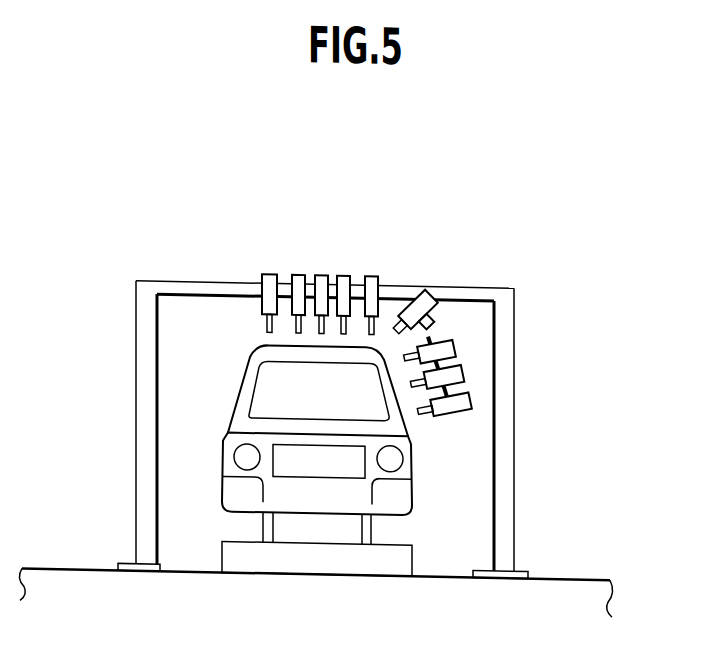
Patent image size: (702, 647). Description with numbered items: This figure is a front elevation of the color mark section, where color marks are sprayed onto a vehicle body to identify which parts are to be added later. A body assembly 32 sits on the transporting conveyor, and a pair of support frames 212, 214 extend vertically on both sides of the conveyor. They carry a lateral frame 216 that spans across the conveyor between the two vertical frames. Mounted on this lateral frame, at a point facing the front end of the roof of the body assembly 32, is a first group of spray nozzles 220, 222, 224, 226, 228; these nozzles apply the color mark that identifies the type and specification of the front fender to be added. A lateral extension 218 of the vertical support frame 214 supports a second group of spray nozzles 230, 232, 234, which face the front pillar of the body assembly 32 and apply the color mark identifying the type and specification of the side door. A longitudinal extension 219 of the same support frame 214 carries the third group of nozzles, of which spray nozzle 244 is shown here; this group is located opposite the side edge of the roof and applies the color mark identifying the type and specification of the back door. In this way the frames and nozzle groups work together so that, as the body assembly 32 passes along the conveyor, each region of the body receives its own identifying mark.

The body assembly 32 is at (241, 342).
The support frame 212 is at (142, 449).
The support frame 214 is at (505, 423).
The lateral frame 216 is at (477, 277).
The lateral extension 218 is at (478, 375).
The longitudinal extension 219 is at (436, 309).
The spray nozzle 220 is at (268, 268).
The spray nozzle 222 is at (299, 268).
The spray nozzle 224 is at (323, 268).
The spray nozzle 226 is at (346, 268).
The spray nozzle 228 is at (375, 268).
The spray nozzle 230 is at (453, 339).
The spray nozzle 232 is at (464, 359).
The spray nozzle 234 is at (457, 403).
The spray nozzle 244 is at (426, 287).